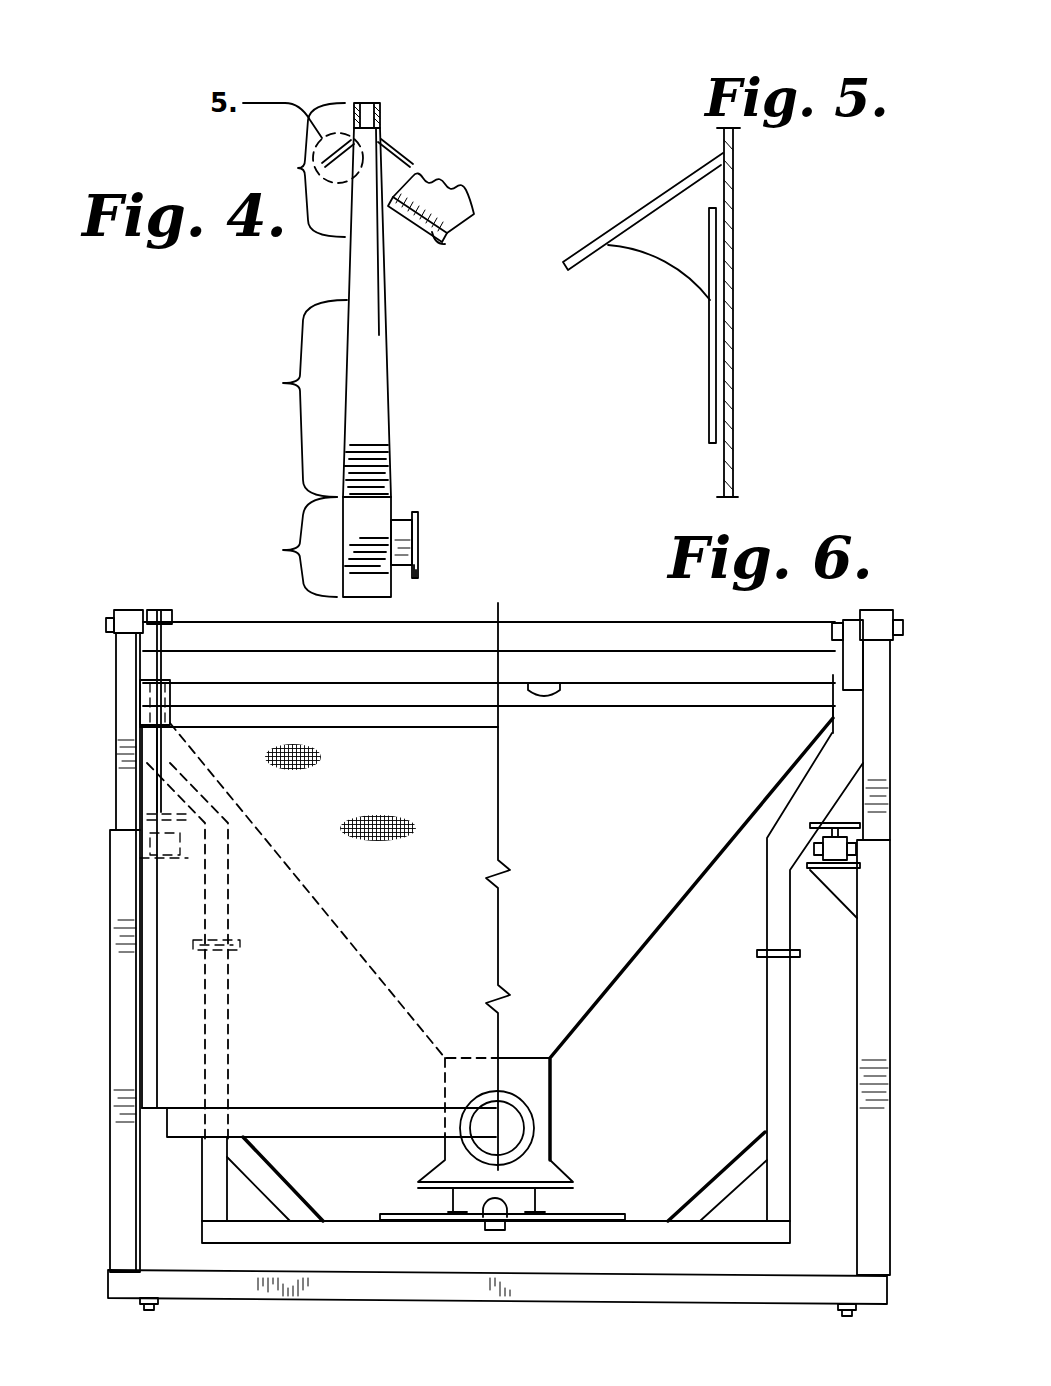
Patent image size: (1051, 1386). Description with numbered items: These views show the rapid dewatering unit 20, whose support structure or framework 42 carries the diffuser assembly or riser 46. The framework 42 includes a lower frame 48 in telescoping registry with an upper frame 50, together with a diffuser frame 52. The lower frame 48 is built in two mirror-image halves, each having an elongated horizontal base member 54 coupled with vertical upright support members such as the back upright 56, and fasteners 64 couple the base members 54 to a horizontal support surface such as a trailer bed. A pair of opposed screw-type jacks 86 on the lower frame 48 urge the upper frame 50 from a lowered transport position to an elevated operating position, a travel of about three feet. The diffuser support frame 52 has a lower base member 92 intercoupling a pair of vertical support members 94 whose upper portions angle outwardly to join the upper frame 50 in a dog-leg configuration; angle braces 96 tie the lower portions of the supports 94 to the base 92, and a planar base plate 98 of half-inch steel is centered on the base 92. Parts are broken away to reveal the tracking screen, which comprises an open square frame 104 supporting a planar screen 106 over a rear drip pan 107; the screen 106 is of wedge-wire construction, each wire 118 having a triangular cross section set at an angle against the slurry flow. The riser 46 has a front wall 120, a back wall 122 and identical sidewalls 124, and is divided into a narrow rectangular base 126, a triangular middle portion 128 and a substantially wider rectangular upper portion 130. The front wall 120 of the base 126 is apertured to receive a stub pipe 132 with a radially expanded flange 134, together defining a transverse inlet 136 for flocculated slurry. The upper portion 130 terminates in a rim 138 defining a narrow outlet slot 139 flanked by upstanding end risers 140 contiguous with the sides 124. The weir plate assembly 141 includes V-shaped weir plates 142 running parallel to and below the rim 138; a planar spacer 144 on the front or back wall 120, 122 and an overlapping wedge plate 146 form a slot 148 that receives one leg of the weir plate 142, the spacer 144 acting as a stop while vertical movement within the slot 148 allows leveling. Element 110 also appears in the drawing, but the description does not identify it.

In FIG. 4, the rapid dewatering unit 20 is at (322, 337).
In FIG. 6, the rapid dewatering unit 20 is at (513, 600).
In FIG. 6, the support structure or framework 42 is at (111, 681).
In FIG. 4, the diffuser assembly or riser 46 is at (384, 335).
In FIG. 6, the diffuser assembly or riser 46 is at (676, 912).
In FIG. 6, the lower frame 48 is at (893, 896).
In FIG. 6, the upper frame 50 is at (888, 706).
In FIG. 6, the diffuser frame 52 is at (791, 1003).
In FIG. 6, the horizontal base member 54 is at (527, 1290).
In FIG. 6, the back vertical upright support member 56 is at (125, 1205).
In FIG. 6, the fasteners 64 is at (148, 1305).
In FIG. 6, the screw-type jacks 86 is at (160, 836).
In FIG. 6, the lower base member 92 is at (682, 1232).
In FIG. 6, the vertical support members 94 is at (222, 1013).
In FIG. 6, the angle braces 96 is at (292, 1181).
In FIG. 6, the base plate 98 is at (568, 1216).
In FIG. 6, the open square frame 104 is at (152, 906).
In FIG. 4, the screen 106 is at (455, 200).
In FIG. 6, the screen 106 is at (399, 802).
In FIG. 4, the rear drip pan 107 is at (445, 244).
In FIG. 6, the hopper bottom plate 110 is at (320, 1110).
In FIG. 6, the wedge wire 118 is at (320, 758).
In FIG. 4, the front wall 120 is at (382, 306).
In FIG. 4, the back wall 122 is at (301, 315).
In FIG. 4, the sidewalls 124 is at (386, 396).
In FIG. 6, the sidewalls 124 is at (832, 718).
In FIG. 4, the base 126 is at (283, 550).
In FIG. 4, the middle portion 128 is at (283, 383).
In FIG. 4, the upper portion 130 is at (302, 170).
In FIG. 4, the stub pipe 132 is at (397, 520).
In FIG. 4, the radially expanded flange 134 is at (418, 576).
In FIG. 4, the inlet 136 is at (420, 541).
In FIG. 6, the rim 138 is at (622, 684).
In FIG. 4, the outlet slot 139 is at (373, 105).
In FIG. 6, the outlet slot 139 is at (545, 683).
In FIG. 6, the end risers 140 is at (172, 688).
In FIG. 5, the weir plate assembly 141 is at (697, 312).
In FIG. 4, the weir plates 142 is at (402, 150).
In FIG. 5, the weir plates 142 is at (645, 208).
In FIG. 5, the spacer 144 is at (720, 470).
In FIG. 5, the wedge plate 146 is at (712, 383).
In FIG. 5, the slot 148 is at (712, 210).